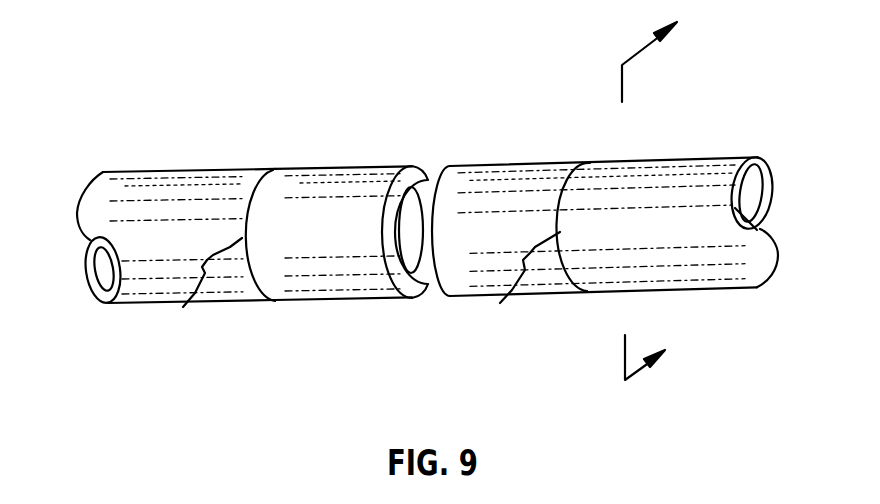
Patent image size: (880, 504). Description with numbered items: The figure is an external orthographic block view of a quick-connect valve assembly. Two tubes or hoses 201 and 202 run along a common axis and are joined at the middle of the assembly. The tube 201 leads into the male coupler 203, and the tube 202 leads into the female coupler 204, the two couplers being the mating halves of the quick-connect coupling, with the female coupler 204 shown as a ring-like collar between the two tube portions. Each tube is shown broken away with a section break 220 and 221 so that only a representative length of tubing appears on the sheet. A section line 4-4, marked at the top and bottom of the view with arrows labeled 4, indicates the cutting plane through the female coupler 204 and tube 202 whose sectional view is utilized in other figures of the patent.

The tube/hose 201 is at (140, 169).
The tube/hose 202 is at (662, 160).
The male coupler 203 is at (331, 299).
The female coupler 204 is at (495, 164).
The section break of first tubular member 220 is at (183, 307).
The section break of second tubular member 221 is at (500, 303).
The section 4- 4 is at (664, 194).